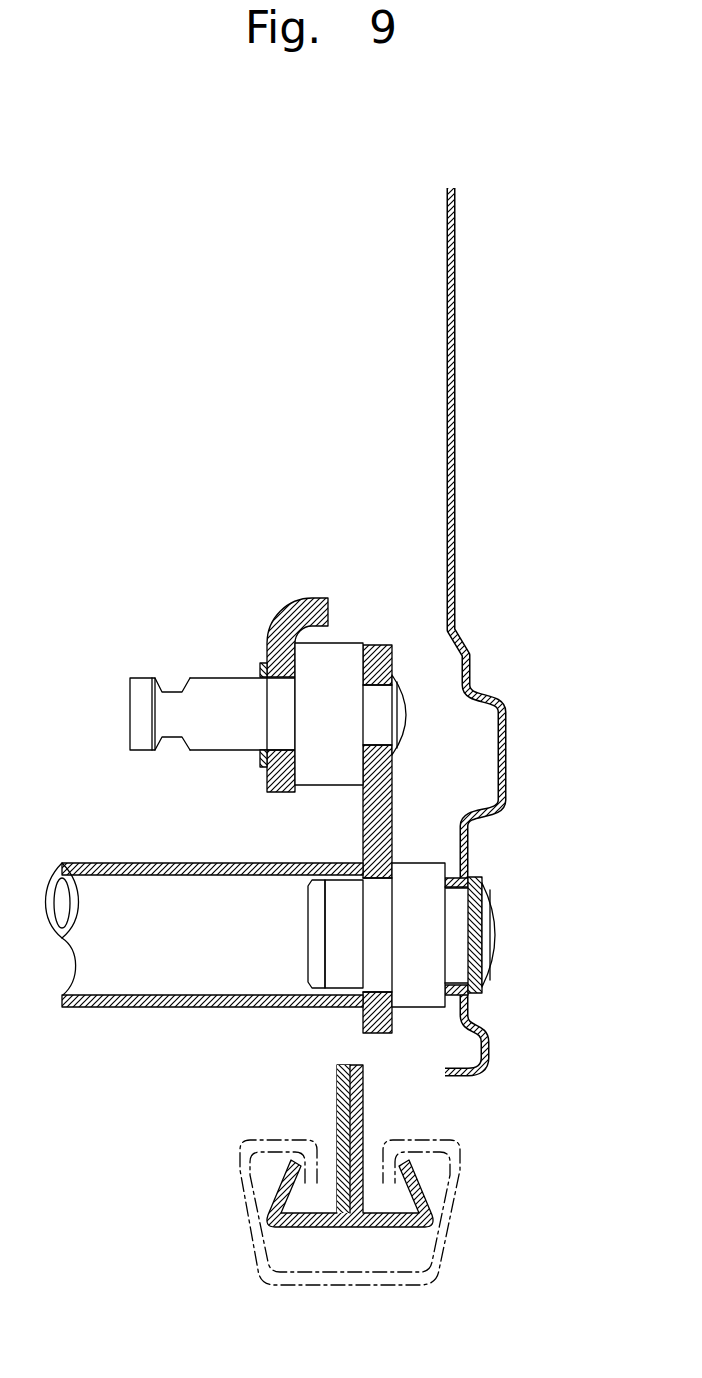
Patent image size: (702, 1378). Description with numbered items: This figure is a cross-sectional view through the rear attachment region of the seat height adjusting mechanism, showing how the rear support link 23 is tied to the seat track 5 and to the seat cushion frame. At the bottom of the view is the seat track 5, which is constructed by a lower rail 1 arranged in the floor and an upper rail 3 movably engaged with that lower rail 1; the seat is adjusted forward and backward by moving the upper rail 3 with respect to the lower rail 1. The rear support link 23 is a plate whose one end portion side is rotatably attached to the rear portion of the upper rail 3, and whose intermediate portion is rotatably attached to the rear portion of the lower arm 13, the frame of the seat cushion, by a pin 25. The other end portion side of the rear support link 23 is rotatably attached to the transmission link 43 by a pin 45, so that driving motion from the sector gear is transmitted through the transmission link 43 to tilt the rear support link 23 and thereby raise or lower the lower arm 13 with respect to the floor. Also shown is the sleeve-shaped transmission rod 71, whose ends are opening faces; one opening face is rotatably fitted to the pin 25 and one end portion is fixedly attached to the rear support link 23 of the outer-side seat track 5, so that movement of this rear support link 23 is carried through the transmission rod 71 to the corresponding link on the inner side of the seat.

The lower arm 13 is at (457, 393).
The rear support link 23 is at (392, 813).
The transmission link 43 is at (273, 617).
The pin 45 is at (383, 698).
The transmission rod 71 is at (190, 863).
The pin 25 is at (428, 923).
The upper rail 3 is at (413, 1225).
The lower rail 1 is at (437, 1147).
The seat track 5 is at (515, 1250).